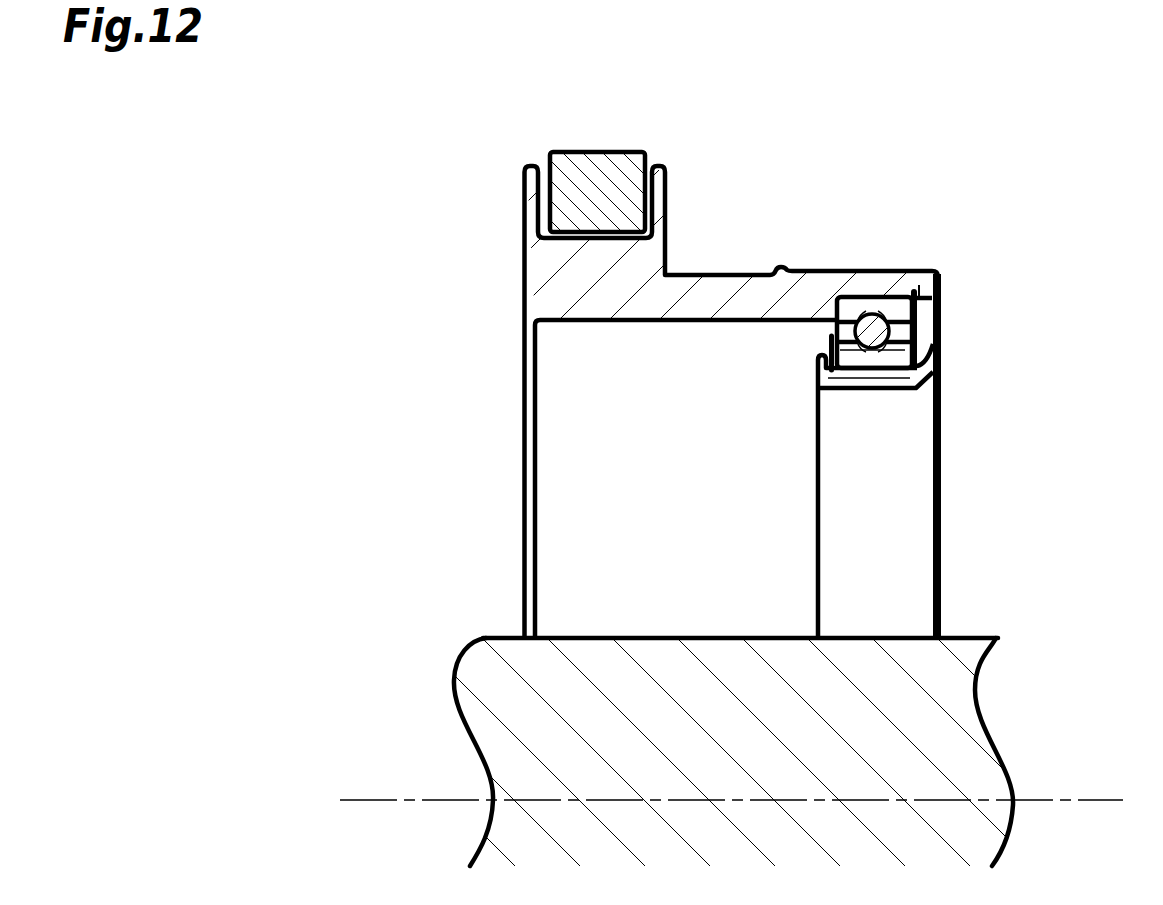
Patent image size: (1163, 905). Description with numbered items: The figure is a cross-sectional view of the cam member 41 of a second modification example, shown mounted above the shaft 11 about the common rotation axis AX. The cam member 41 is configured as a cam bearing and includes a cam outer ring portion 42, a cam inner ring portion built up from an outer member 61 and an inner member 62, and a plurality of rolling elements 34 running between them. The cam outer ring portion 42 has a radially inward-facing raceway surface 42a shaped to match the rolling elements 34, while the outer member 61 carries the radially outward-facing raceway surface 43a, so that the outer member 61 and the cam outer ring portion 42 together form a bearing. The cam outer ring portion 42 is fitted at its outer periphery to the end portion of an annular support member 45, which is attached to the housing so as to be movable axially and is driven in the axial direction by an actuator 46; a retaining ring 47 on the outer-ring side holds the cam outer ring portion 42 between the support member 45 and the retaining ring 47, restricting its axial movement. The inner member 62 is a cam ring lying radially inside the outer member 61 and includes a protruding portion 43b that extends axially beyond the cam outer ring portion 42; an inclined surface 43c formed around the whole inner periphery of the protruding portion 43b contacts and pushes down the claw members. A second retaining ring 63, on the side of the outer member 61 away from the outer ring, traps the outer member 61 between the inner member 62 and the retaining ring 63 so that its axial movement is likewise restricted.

The shaft 11 is at (965, 662).
The rotation axis AX is at (1083, 800).
The rolling elements 34 is at (920, 332).
The cam member 41 is at (912, 292).
The cam outer ring portion 42 is at (858, 296).
The raceway surface 42a is at (872, 314).
The raceway surface 43a is at (838, 340).
The protruding portion 43b is at (921, 357).
The inclined surface 43c is at (937, 384).
The support member 45 is at (697, 295).
The actuator 46 is at (600, 182).
The retaining ring 47 is at (926, 298).
The outer member 61 is at (882, 353).
The inner member 62 is at (866, 380).
The retaining ring 63 is at (832, 348).